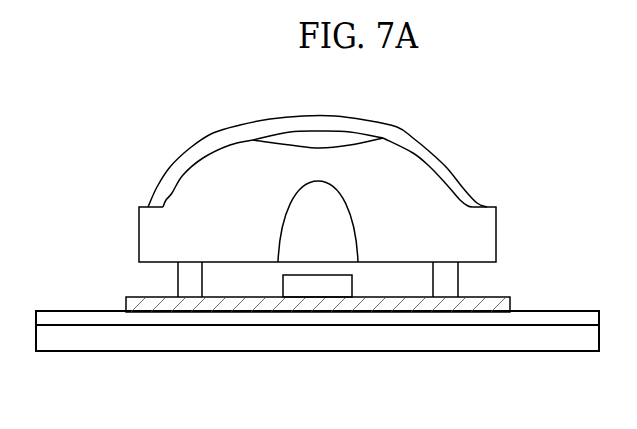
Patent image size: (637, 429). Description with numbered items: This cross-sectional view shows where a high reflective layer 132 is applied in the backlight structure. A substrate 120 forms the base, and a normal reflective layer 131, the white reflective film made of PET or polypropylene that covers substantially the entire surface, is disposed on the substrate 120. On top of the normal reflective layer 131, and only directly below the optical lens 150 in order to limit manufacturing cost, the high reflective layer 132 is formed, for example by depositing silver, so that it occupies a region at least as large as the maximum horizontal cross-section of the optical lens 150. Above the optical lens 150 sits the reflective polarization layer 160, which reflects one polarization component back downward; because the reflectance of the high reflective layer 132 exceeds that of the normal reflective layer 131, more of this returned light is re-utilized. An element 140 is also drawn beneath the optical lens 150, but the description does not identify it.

The substrate 120 is at (478, 337).
The normal reflective layer 131 is at (195, 317).
The high reflective layer 132 is at (387, 303).
The light emitting element 140 is at (300, 290).
The optical lens 150 is at (485, 220).
The reflective polarization layer 160 is at (455, 168).